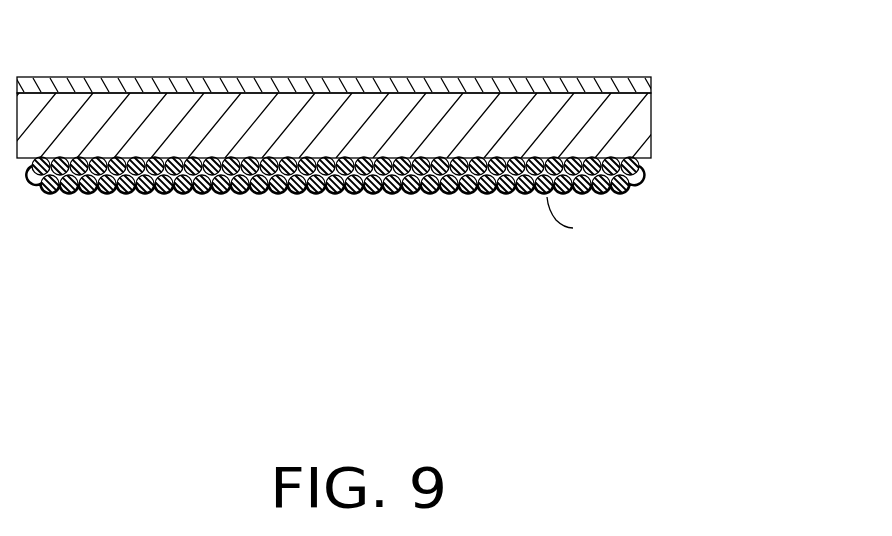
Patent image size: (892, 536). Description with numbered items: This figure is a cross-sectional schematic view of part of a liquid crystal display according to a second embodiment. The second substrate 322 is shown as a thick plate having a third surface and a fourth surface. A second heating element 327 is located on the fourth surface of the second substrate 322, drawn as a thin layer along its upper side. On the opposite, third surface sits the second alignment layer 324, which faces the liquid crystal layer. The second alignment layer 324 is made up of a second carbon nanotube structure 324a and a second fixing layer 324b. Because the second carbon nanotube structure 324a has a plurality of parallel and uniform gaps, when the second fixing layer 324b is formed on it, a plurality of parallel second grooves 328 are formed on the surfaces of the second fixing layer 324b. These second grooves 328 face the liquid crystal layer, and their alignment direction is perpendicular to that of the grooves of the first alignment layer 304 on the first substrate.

The first alignment layer 304 is at (434, 138).
The second heating element 327 is at (626, 84).
The second substrate 322 is at (633, 112).
The second alignment layer 324 is at (423, 190).
The second carbon nanotube structure 324a is at (637, 166).
The second fixing layer 324b is at (618, 197).
The second grooves 328 is at (590, 222).